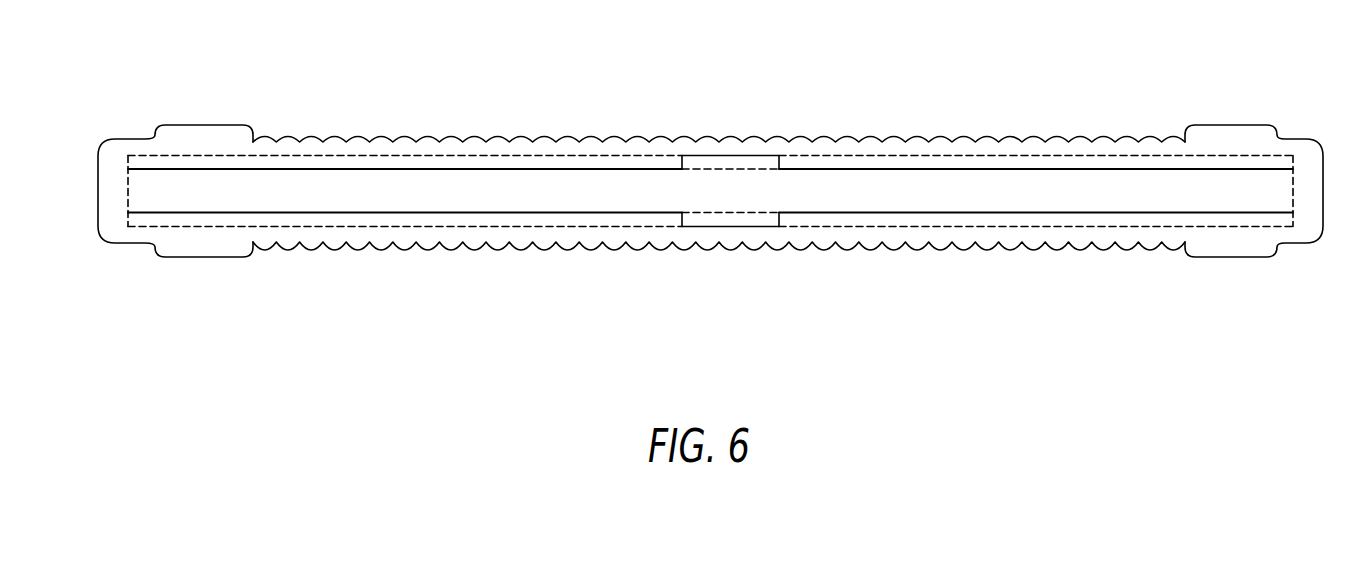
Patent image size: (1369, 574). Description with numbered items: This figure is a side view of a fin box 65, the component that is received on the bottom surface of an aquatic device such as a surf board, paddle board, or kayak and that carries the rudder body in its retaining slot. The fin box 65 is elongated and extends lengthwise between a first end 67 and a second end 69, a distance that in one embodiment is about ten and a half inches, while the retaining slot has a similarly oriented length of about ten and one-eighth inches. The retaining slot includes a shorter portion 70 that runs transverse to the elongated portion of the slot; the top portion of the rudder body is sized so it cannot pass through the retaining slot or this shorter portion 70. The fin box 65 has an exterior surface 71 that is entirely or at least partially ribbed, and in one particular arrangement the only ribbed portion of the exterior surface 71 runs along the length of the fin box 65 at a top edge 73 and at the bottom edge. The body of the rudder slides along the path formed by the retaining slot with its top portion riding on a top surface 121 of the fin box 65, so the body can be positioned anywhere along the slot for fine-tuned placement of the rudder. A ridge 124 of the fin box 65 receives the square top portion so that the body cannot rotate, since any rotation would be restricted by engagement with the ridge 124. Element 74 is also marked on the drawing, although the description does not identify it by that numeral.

The fin box 65 is at (1015, 77).
The first end 67 is at (98, 190).
The second end 69 is at (1325, 193).
The shorter portion 70 is at (717, 218).
The exterior surface 71 is at (853, 138).
The top edge 73 is at (670, 147).
The core panel 74 is at (128, 192).
The top surface 121 is at (218, 220).
The ridge 124 is at (285, 155).